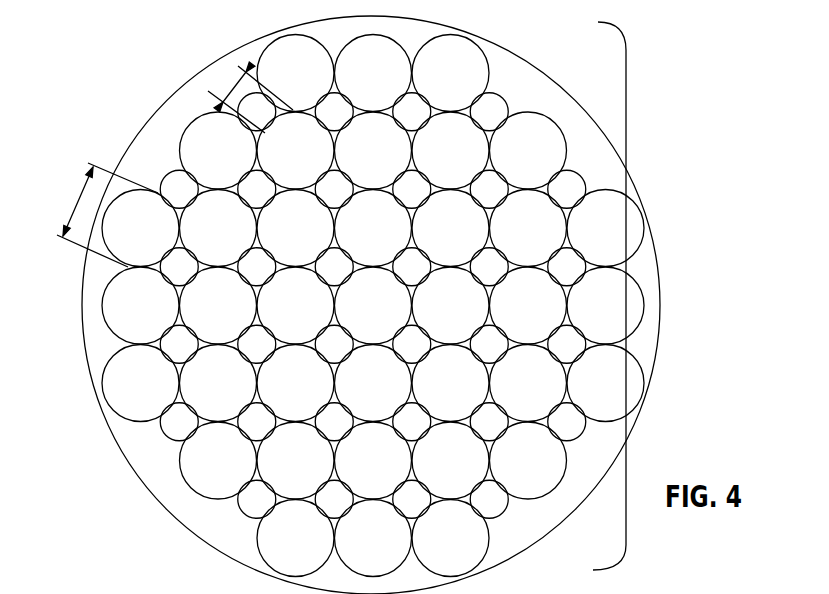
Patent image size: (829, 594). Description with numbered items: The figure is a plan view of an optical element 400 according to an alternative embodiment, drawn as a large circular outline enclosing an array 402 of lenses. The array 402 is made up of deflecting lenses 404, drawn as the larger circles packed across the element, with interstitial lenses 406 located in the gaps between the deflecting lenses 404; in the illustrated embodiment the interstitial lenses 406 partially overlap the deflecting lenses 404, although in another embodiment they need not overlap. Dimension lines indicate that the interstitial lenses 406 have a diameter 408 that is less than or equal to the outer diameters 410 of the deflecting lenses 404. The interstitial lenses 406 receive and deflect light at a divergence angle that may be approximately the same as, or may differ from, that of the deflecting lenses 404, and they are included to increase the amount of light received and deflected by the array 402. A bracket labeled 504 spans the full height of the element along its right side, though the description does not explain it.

The optical element 400 is at (377, 305).
The array 402 is at (643, 300).
The deflecting lenses 404 is at (135, 312).
The interstitial lenses 406 is at (250, 504).
The diameter 408 is at (234, 87).
The outer diameters 410 is at (78, 202).
The bundle extent 504 is at (589, 308).